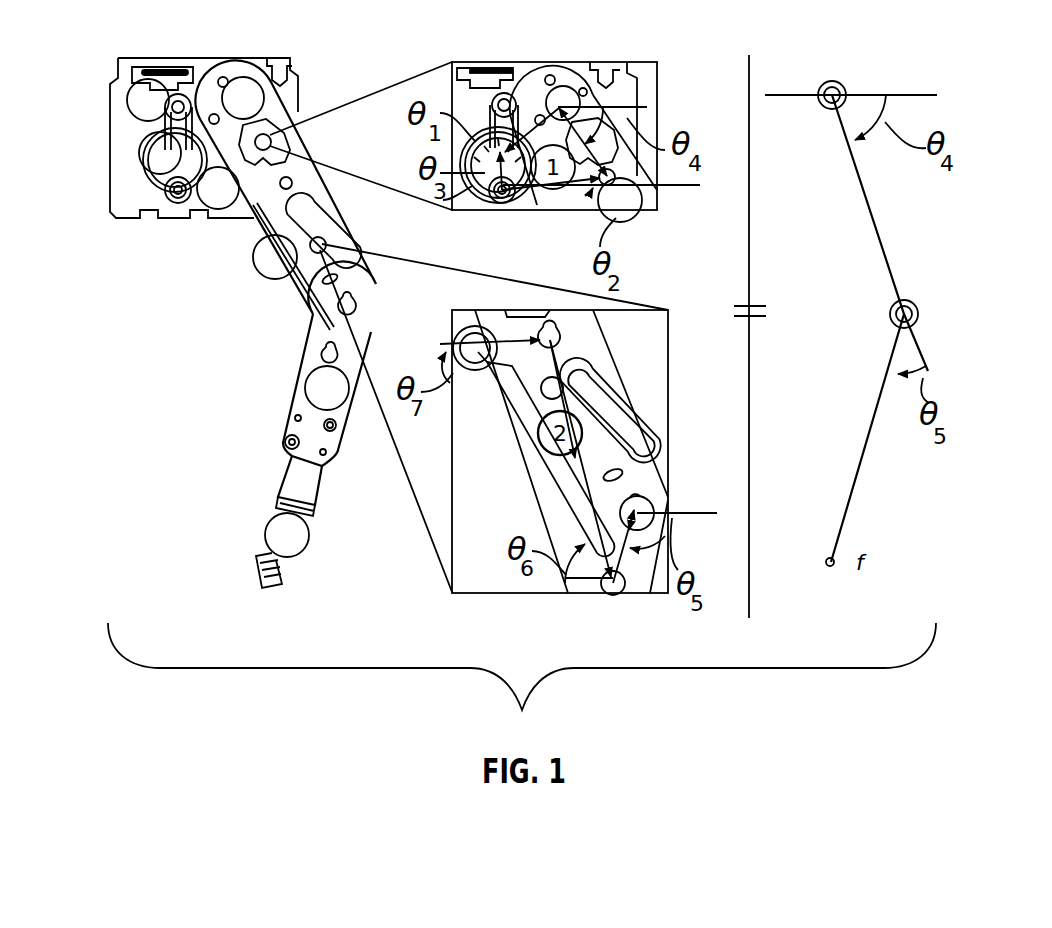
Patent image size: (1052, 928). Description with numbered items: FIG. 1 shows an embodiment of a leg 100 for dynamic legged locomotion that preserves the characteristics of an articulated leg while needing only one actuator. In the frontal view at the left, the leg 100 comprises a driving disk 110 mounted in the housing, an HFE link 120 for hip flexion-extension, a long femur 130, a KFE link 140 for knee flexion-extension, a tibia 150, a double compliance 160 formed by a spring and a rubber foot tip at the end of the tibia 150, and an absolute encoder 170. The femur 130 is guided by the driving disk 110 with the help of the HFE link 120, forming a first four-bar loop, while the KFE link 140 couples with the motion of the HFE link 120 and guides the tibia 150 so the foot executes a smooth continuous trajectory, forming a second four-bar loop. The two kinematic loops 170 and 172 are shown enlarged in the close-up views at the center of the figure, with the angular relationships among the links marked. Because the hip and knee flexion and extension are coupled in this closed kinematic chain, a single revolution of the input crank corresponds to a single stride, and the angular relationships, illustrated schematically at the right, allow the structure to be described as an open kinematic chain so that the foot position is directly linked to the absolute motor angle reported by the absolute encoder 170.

The leg 100 is at (128, 241).
The driving disk 110 is at (138, 157).
The HFE link 120 is at (220, 222).
The femur 130 is at (250, 80).
The KFE link 140 is at (265, 288).
The tibia 150 is at (305, 390).
The double compliance 160 is at (265, 535).
The absolute encoder 170 is at (124, 100).
The kinematic loop 172 is at (326, 241).